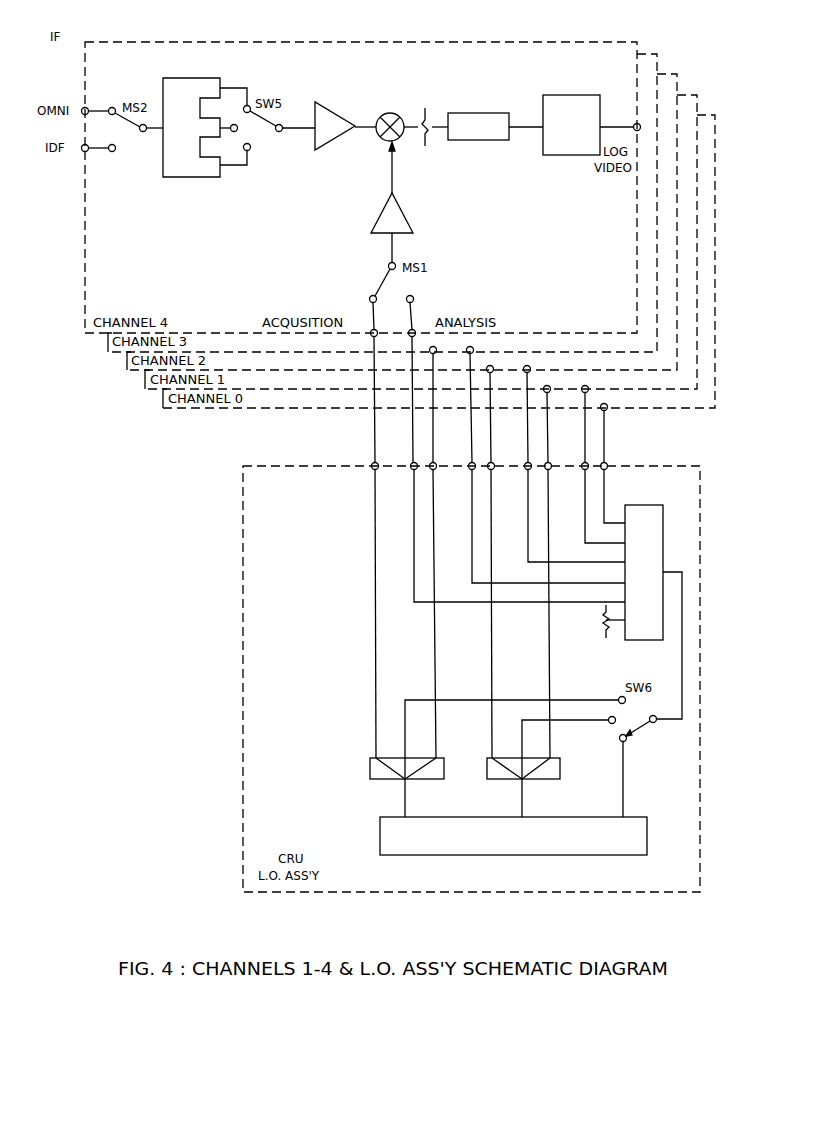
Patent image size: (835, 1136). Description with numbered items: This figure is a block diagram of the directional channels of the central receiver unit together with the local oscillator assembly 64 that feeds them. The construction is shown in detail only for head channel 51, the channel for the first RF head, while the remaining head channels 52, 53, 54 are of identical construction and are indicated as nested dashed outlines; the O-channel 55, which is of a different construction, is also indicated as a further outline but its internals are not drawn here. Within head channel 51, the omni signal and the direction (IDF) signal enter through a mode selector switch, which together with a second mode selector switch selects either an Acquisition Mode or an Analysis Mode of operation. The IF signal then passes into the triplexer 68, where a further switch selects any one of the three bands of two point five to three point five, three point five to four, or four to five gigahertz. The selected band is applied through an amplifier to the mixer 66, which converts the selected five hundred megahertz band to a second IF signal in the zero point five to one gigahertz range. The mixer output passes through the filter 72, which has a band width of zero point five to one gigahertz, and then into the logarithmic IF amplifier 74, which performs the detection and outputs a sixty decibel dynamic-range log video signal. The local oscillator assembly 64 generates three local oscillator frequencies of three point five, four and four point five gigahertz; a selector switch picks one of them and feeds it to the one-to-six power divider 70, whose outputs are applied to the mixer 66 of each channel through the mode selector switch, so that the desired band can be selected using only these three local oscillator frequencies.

The head channel 54 is at (631, 38).
The head channel 53 is at (648, 52).
The head channel 52 is at (666, 72).
The head channel 51 is at (683, 93).
The O-channel 55 is at (703, 113).
The triplexer 68 is at (198, 78).
The mixer 66 is at (397, 114).
The filter 72 is at (516, 106).
The logarithmic IF amplifier 74 is at (604, 104).
The local oscillator assembly 64 is at (683, 465).
The power divider 70 is at (652, 505).